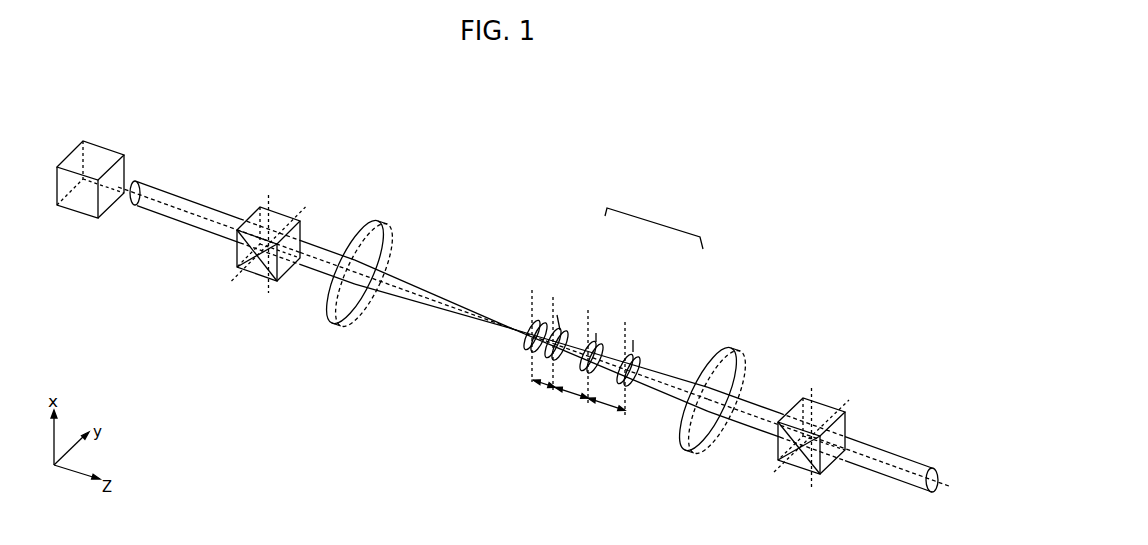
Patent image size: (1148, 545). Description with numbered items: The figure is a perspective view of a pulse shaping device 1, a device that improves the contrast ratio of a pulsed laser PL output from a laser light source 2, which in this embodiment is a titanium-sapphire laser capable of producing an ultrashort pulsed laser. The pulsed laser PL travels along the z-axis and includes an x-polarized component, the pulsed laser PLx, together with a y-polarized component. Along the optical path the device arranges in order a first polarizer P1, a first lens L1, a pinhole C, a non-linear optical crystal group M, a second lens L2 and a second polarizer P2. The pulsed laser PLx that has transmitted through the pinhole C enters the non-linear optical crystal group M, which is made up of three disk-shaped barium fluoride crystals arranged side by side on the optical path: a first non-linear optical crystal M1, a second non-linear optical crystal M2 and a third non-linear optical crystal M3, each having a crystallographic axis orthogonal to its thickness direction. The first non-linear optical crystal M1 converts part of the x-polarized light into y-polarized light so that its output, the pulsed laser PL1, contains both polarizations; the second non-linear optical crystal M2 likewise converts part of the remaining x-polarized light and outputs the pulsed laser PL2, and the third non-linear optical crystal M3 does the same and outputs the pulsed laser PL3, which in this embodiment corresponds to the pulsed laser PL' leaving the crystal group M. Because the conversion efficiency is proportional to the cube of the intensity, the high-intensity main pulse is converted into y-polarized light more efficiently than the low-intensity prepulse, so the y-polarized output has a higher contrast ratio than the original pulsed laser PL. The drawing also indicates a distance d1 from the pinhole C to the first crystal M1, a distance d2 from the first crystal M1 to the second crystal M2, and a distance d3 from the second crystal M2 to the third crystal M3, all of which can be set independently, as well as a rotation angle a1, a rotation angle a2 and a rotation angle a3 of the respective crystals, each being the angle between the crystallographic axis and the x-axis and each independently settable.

The pulse shaping device 1 is at (841, 136).
The laser light source 2 is at (98, 157).
The pulsed laser PL is at (209, 178).
The first polarizer P1 is at (278, 211).
The pulsed laser (x-polarized light) PLx is at (332, 247).
The first lens L1 is at (380, 234).
The pinhole C is at (524, 323).
The pulsed laser PL1 is at (535, 368).
The non-linear optical crystal group M is at (656, 224).
The first non-linear optical crystal M1 is at (574, 323).
The second non-linear optical crystal M2 is at (606, 335).
The third non-linear optical crystal M3 is at (640, 345).
The rotation angle of the first non-linear optical crystal a1 is at (557, 315).
The rotation angle of the second non-linear optical crystal a2 is at (596, 333).
The rotation angle of the third non-linear optical crystal a3 is at (633, 340).
The distance from the pinhole to the first non-linear optical crystal d1 is at (540, 389).
The distance from the first to the second non-linear optical crystal d2 is at (568, 398).
The distance from the second to the third non-linear optical crystal d3 is at (603, 411).
The pulsed laser PL2 is at (601, 398).
The pulsed laser PL3 is at (664, 393).
The second lens L2 is at (733, 361).
The pulsed laser PL' is at (829, 380).
The second polarizer P2 is at (818, 404).